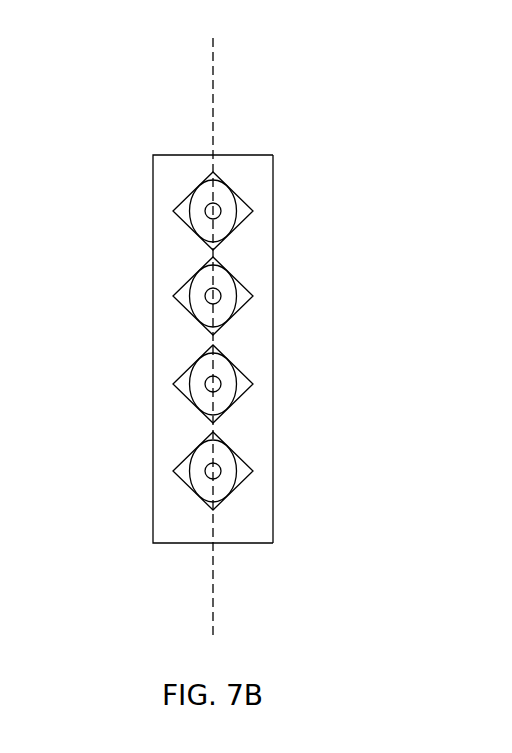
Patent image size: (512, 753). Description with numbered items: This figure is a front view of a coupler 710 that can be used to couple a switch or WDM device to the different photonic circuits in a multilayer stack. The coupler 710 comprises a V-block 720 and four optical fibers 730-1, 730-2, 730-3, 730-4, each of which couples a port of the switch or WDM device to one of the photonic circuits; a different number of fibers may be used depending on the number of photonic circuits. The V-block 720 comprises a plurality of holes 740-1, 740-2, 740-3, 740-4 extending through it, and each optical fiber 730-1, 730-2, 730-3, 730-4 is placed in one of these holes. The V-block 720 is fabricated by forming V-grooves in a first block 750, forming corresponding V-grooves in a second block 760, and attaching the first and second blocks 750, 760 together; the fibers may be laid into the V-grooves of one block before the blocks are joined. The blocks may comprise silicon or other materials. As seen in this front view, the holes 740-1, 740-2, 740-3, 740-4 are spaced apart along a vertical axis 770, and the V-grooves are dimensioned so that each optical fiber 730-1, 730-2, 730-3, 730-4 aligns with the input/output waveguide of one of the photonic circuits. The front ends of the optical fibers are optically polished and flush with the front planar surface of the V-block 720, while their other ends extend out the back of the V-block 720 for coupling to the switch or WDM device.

The coupler 710 is at (510, 62).
The V-block 720 is at (176, 120).
The optical fiber 730-1 is at (219, 209).
The optical fiber 730-2 is at (219, 294).
The optical fiber 730-3 is at (219, 382).
The optical fiber 730-4 is at (219, 469).
The hole 740-1 is at (183, 210).
The hole 740-2 is at (183, 295).
The hole 740-3 is at (183, 383).
The hole 740-4 is at (183, 471).
The first block 750 is at (177, 155).
The second block 760 is at (257, 155).
The vertical axis 770 is at (218, 90).